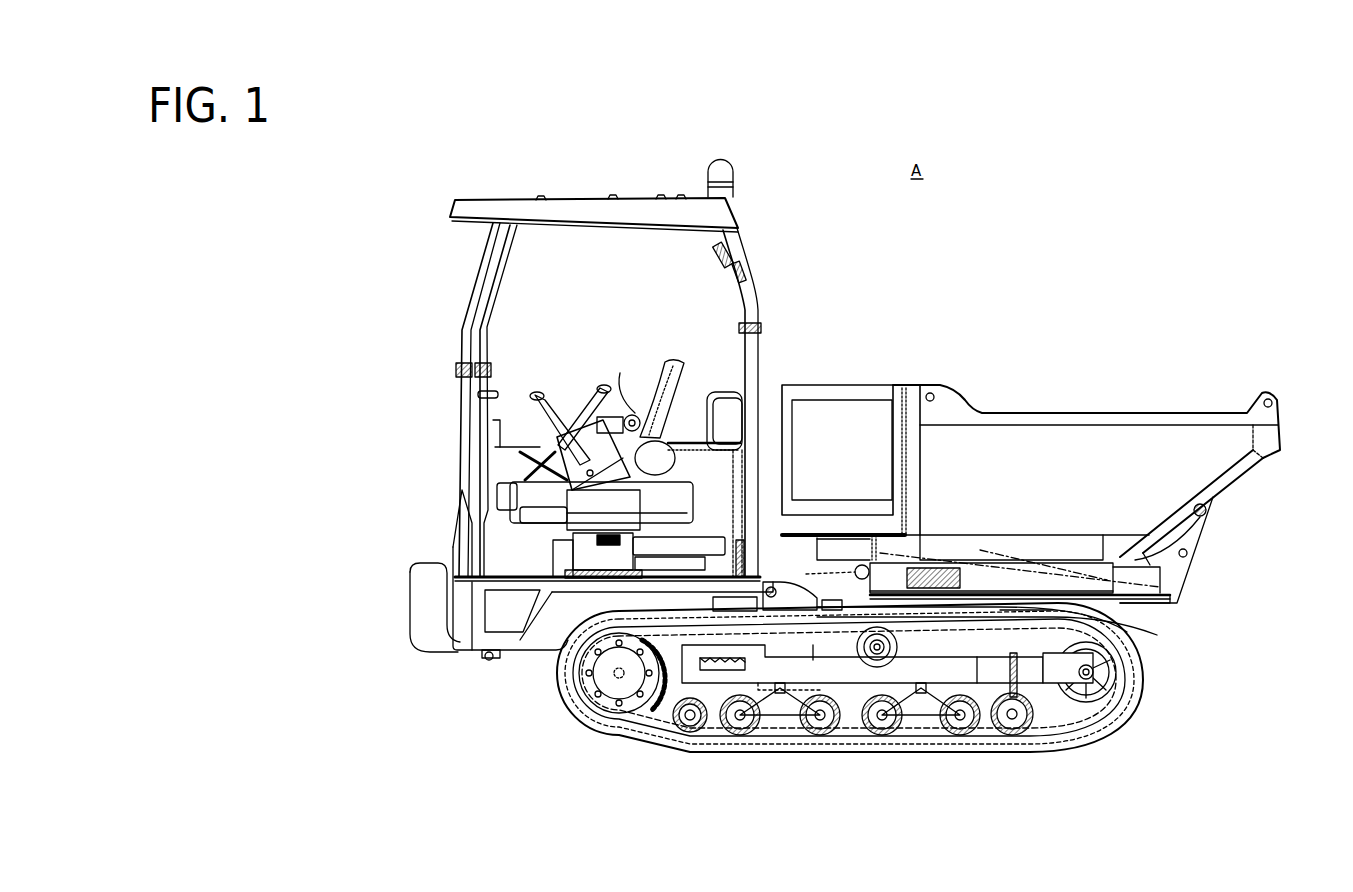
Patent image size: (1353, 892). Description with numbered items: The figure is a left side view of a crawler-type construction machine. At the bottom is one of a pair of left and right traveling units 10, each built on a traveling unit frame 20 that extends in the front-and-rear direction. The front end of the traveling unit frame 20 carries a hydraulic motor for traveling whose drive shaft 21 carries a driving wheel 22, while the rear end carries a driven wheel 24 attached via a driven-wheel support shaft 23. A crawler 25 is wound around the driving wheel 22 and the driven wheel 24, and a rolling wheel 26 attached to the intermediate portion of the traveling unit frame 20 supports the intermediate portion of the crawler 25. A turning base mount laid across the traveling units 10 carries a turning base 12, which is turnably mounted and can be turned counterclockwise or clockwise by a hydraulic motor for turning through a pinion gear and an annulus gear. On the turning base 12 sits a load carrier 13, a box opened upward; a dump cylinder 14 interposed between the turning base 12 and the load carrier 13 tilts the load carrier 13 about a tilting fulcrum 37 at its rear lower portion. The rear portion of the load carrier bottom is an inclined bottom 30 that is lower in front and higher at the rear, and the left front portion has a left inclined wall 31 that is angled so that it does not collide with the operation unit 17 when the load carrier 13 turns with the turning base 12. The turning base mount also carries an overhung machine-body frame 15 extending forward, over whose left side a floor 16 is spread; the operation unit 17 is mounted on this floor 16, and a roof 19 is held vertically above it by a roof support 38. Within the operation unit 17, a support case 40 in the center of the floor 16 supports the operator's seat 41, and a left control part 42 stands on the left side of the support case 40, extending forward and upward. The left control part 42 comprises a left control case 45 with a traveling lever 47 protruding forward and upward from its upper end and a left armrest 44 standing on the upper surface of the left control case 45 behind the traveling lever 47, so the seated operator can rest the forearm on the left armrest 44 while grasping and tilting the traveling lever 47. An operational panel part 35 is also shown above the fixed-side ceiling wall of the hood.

The traveling unit 10 is at (1148, 692).
The turning base 12 is at (1128, 630).
The load carrier 13 is at (1058, 403).
The dump cylinder 14 is at (982, 548).
The overhung machine-body frame 15 is at (547, 641).
The floor 16 is at (505, 573).
The operation unit 17 is at (598, 318).
The roof 19 is at (585, 200).
The traveling unit frame 20 is at (853, 680).
The drive shaft 21 is at (618, 680).
The driving wheel 22 is at (663, 702).
The driven-wheel support shaft 23 is at (1097, 690).
The driven wheel 24 is at (1058, 698).
The crawler 25 is at (932, 748).
The rolling wheel 26 is at (748, 737).
The inclined bottom 30 is at (1228, 485).
The left inclined wall 31 is at (816, 411).
The operational panel part 35 is at (617, 400).
The tilting fulcrum 37 is at (1207, 512).
The roof support 38 is at (480, 267).
The support case 40 is at (583, 562).
The operator's seat 41 is at (673, 364).
The left control part 42 is at (548, 413).
The left armrest 44 is at (590, 418).
The left control case 45 is at (592, 463).
The traveling lever 47 is at (523, 395).